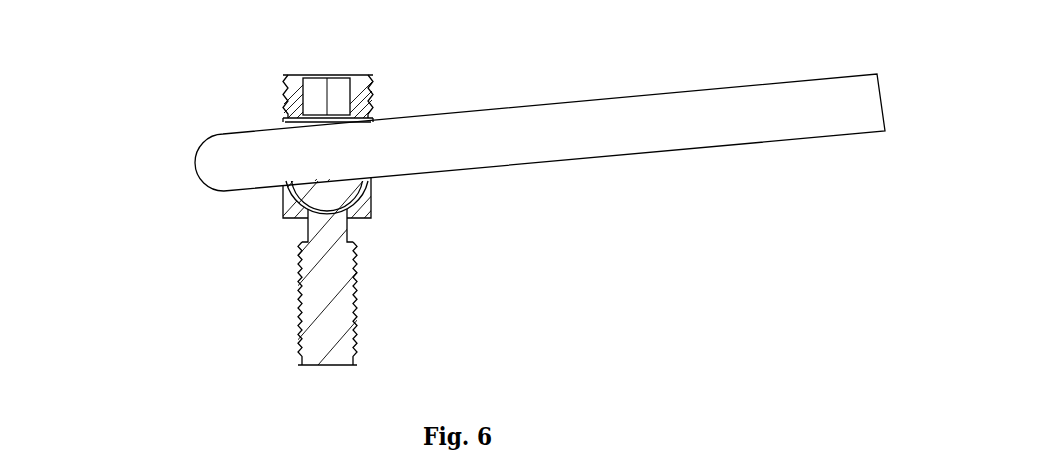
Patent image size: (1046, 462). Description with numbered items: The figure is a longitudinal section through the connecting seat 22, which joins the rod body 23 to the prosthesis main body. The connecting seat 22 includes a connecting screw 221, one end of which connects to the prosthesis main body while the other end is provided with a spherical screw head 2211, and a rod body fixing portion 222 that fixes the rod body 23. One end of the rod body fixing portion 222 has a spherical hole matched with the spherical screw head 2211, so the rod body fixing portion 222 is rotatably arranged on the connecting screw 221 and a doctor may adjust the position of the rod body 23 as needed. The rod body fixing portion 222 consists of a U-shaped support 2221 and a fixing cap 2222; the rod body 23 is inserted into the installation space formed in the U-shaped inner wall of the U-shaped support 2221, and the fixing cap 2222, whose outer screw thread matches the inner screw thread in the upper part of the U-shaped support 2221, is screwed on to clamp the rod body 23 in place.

The connecting seat 22 is at (82, 155).
The connecting screw 221 is at (361, 265).
The spherical screw head 2211 is at (340, 200).
The rod body fixing portion 222 is at (167, 47).
The U-shaped support 2221 is at (287, 213).
The fixing cap 2222 is at (283, 80).
The rod body 23 is at (492, 135).